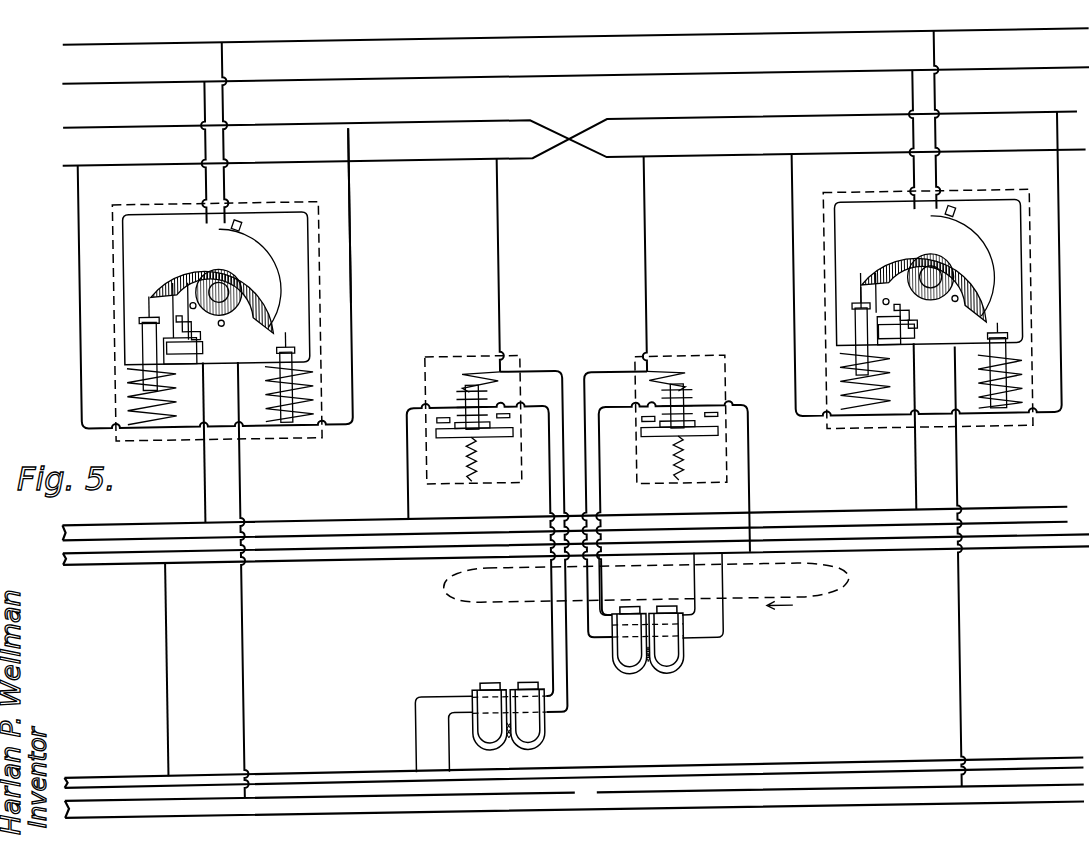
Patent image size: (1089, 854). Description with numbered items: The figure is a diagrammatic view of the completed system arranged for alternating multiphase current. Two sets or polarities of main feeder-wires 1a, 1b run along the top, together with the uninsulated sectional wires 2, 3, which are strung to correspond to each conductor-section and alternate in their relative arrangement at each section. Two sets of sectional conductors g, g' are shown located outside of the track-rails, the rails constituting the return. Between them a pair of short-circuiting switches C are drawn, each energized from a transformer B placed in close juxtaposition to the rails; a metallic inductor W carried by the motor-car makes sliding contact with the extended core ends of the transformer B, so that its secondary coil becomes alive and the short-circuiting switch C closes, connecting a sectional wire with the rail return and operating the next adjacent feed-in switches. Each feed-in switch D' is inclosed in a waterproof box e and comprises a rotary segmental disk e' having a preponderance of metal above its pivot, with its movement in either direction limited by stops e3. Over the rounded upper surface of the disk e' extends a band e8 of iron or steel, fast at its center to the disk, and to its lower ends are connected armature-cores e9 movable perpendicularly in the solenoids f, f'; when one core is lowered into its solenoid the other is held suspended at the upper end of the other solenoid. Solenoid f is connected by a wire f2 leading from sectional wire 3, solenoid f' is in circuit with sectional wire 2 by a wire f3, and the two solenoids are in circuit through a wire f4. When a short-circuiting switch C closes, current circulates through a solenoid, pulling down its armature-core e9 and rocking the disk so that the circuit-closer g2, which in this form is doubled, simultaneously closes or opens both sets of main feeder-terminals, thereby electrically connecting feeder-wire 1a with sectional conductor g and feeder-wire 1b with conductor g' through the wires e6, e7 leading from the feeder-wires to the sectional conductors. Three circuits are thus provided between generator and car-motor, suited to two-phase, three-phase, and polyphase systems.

The main feeder-wire 1a is at (576, 126).
The main feeder-wire 1b is at (575, 146).
The uninsulated sectional wire 2 is at (574, 140).
The uninsulated sectional wire 3 is at (570, 132).
The rotary segmental disk e' is at (572, 269).
The feed-in switch D' is at (578, 276).
The wire e6 is at (862, 298).
The band e8 is at (151, 292).
The stops e3 is at (172, 310).
The waterproof box e is at (677, 371).
The armature-core e9 is at (883, 331).
The wire e7 is at (912, 438).
The circuit-closer g2 is at (550, 340).
The solenoid f is at (510, 389).
The solenoid f' is at (630, 388).
The wire f2 is at (550, 270).
The wire f3 is at (355, 328).
The wire f4 is at (313, 298).
The short-circuiting switch C is at (578, 434).
The sectional conductor g is at (575, 525).
The sectional conductor g' is at (574, 804).
The transformer B is at (569, 662).
The metallic inductor W is at (646, 588).